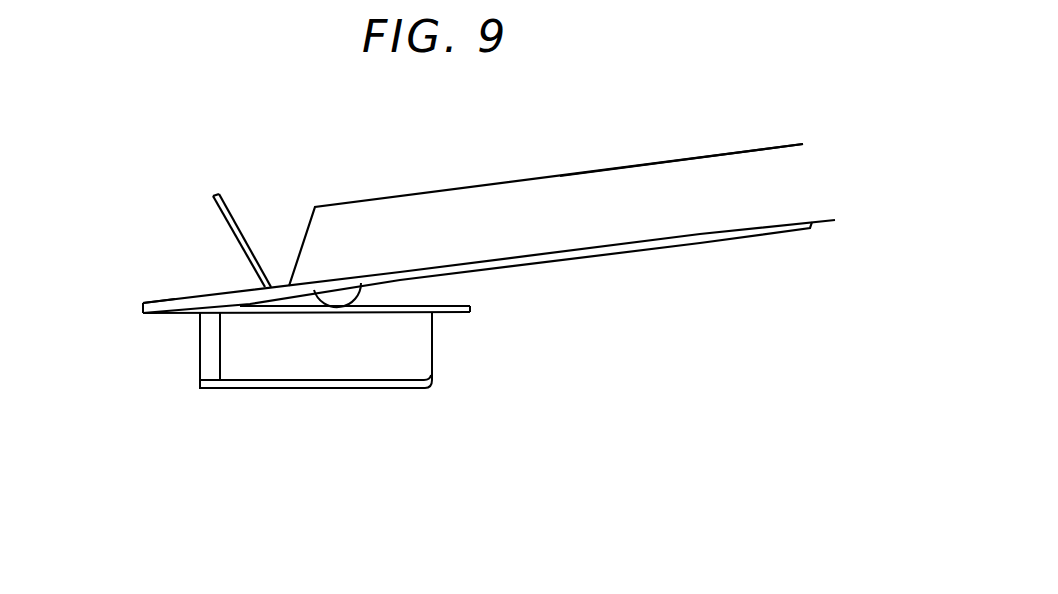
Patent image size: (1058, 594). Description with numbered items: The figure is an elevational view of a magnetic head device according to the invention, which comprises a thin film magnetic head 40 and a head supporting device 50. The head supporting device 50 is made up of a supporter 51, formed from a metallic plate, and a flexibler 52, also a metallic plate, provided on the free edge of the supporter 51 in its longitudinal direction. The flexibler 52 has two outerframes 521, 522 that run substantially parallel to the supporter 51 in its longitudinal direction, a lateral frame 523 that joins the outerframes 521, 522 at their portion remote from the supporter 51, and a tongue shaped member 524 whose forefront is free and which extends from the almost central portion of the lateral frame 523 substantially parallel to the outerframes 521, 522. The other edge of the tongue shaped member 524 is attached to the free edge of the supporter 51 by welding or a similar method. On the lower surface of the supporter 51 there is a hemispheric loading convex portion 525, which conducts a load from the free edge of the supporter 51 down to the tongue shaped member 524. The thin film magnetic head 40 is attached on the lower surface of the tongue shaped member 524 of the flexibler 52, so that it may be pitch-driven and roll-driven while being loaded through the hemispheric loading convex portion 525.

The thin film magnetic head 40 is at (222, 400).
The head supporting device 50 is at (457, 176).
The supporter 51 is at (611, 185).
The flexibler 52 is at (465, 301).
The outerframe 521 is at (202, 298).
The outerframe 522 is at (185, 240).
The lateral frame 523 is at (162, 299).
The tongue shaped member 524 is at (450, 305).
The hemispheric loading convex portion 525 is at (342, 298).